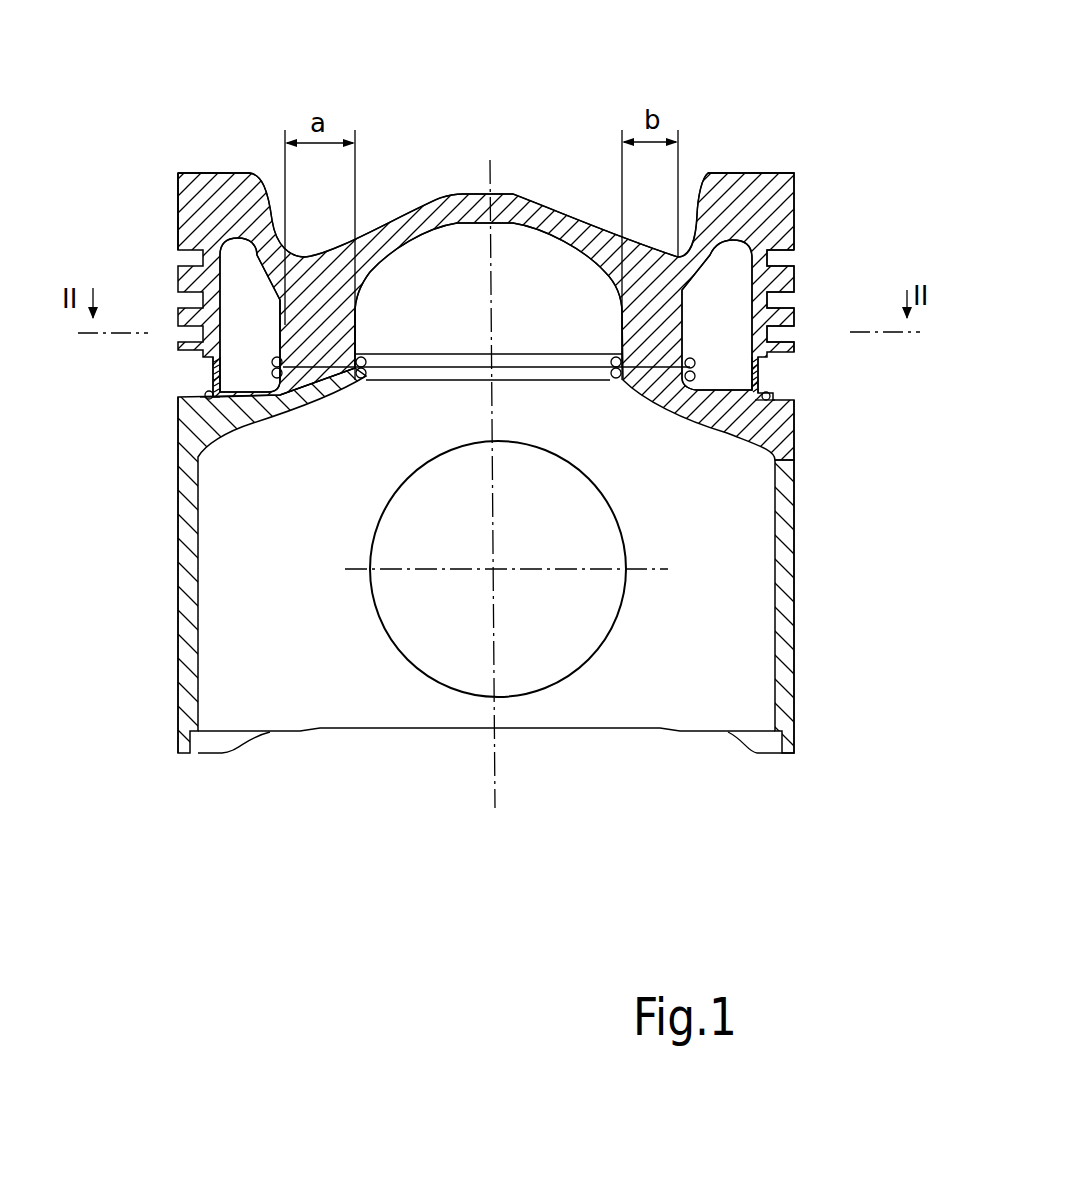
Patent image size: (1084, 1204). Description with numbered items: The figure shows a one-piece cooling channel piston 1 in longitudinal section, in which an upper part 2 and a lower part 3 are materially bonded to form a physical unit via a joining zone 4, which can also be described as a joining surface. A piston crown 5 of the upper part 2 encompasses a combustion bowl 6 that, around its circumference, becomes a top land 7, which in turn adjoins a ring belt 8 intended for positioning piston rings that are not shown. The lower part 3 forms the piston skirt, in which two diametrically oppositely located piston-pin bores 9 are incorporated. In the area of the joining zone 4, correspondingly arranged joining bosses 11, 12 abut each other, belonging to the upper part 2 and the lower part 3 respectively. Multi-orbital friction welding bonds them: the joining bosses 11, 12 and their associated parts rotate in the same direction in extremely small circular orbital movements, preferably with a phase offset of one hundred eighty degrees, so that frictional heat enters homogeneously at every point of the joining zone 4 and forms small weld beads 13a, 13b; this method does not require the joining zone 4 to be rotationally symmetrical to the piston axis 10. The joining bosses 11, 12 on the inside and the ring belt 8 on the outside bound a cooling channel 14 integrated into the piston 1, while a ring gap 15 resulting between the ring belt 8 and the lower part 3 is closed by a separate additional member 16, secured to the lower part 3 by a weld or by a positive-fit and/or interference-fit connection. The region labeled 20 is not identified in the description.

The piston 1 is at (735, 152).
The upper part 2 is at (808, 213).
The lower part 3 is at (818, 603).
The joining zone 4 is at (308, 335).
The piston crown 5 is at (410, 172).
The combustion bowl 6 is at (442, 199).
The top land 7 is at (178, 210).
The ring belt 8 is at (812, 248).
The piston-pin bore 9 is at (567, 628).
The piston axis 10 is at (492, 765).
The joining boss 11 is at (313, 323).
The joining boss 12 is at (310, 380).
The weld bead 13a is at (271, 365).
The weld bead 13b is at (367, 381).
The cooling channel 14 is at (735, 317).
The ring gap 15 is at (763, 370).
The additional member 16 is at (697, 383).
The inner cooling chamber 20 is at (567, 304).